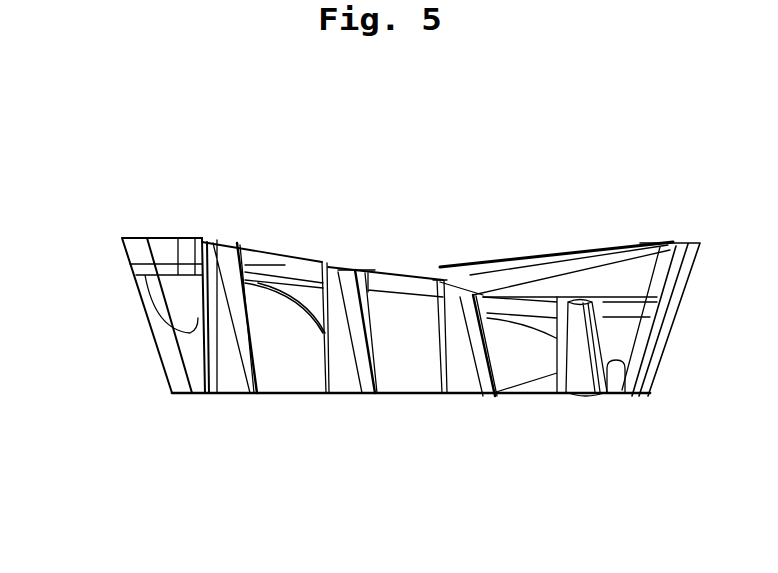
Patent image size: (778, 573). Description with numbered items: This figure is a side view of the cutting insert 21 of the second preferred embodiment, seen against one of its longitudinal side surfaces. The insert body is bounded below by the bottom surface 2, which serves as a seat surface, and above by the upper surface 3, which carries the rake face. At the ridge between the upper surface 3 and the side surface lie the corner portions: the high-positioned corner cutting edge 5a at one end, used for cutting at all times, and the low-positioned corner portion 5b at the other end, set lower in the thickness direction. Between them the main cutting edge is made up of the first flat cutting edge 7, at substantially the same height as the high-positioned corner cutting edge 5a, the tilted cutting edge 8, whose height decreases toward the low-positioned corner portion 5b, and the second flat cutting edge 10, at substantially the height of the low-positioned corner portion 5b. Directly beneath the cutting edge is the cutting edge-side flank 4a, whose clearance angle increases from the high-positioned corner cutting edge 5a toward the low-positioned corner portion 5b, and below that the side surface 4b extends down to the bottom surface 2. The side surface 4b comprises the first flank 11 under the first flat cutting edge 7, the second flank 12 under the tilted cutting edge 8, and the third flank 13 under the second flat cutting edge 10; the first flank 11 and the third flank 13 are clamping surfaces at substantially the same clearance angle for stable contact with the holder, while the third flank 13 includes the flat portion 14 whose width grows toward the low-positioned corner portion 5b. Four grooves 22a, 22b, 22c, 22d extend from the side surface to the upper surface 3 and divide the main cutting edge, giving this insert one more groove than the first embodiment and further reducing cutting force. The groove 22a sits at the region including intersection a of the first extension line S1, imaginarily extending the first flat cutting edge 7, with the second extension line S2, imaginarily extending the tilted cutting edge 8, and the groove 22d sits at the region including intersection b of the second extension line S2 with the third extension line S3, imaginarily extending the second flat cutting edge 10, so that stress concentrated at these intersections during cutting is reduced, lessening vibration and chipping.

The bottom surface 2 is at (182, 397).
The upper surface 3 is at (540, 253).
The cutting edge-side flank 4a is at (168, 253).
The side surface 4b is at (562, 515).
The high-positioned corner cutting edge 5a is at (122, 238).
The low-positioned corner portion 5b is at (673, 290).
The first flat cutting edge 7 is at (162, 237).
The tilted cutting edge 8 is at (290, 262).
The second flat cutting edge 10 is at (640, 268).
The first flank 11 is at (186, 345).
The second flank 12 is at (398, 395).
The third flank 13 is at (525, 395).
The flat portion 14 is at (617, 395).
The insert 21 is at (680, 232).
The groove 22a is at (227, 395).
The groove 22b is at (343, 394).
The groove 22c is at (460, 394).
The groove 22d is at (646, 362).
The intersection a is at (220, 237).
The intersection b is at (598, 297).
The first extension line S1 is at (260, 238).
The second extension line S2 is at (280, 243).
The third extension line S3 is at (624, 292).